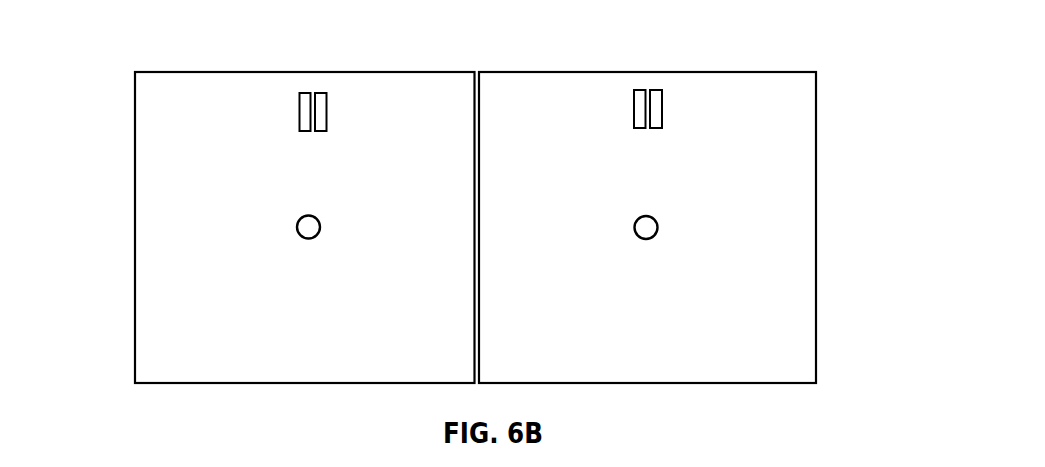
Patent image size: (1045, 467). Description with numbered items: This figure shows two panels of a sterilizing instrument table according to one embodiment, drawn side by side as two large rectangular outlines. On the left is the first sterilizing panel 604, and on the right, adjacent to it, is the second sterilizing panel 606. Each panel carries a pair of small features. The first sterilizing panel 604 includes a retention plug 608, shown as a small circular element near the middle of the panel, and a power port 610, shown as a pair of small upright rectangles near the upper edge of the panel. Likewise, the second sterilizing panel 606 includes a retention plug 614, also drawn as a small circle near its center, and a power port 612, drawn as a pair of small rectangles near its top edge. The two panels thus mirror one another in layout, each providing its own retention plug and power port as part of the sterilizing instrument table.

The first sterilizing panel 604 is at (135, 227).
The second sterilizing panel 606 is at (816, 228).
The retention plug 608 is at (320, 227).
The power port 610 is at (326, 92).
The power port 612 is at (634, 90).
The retention plug 614 is at (658, 227).